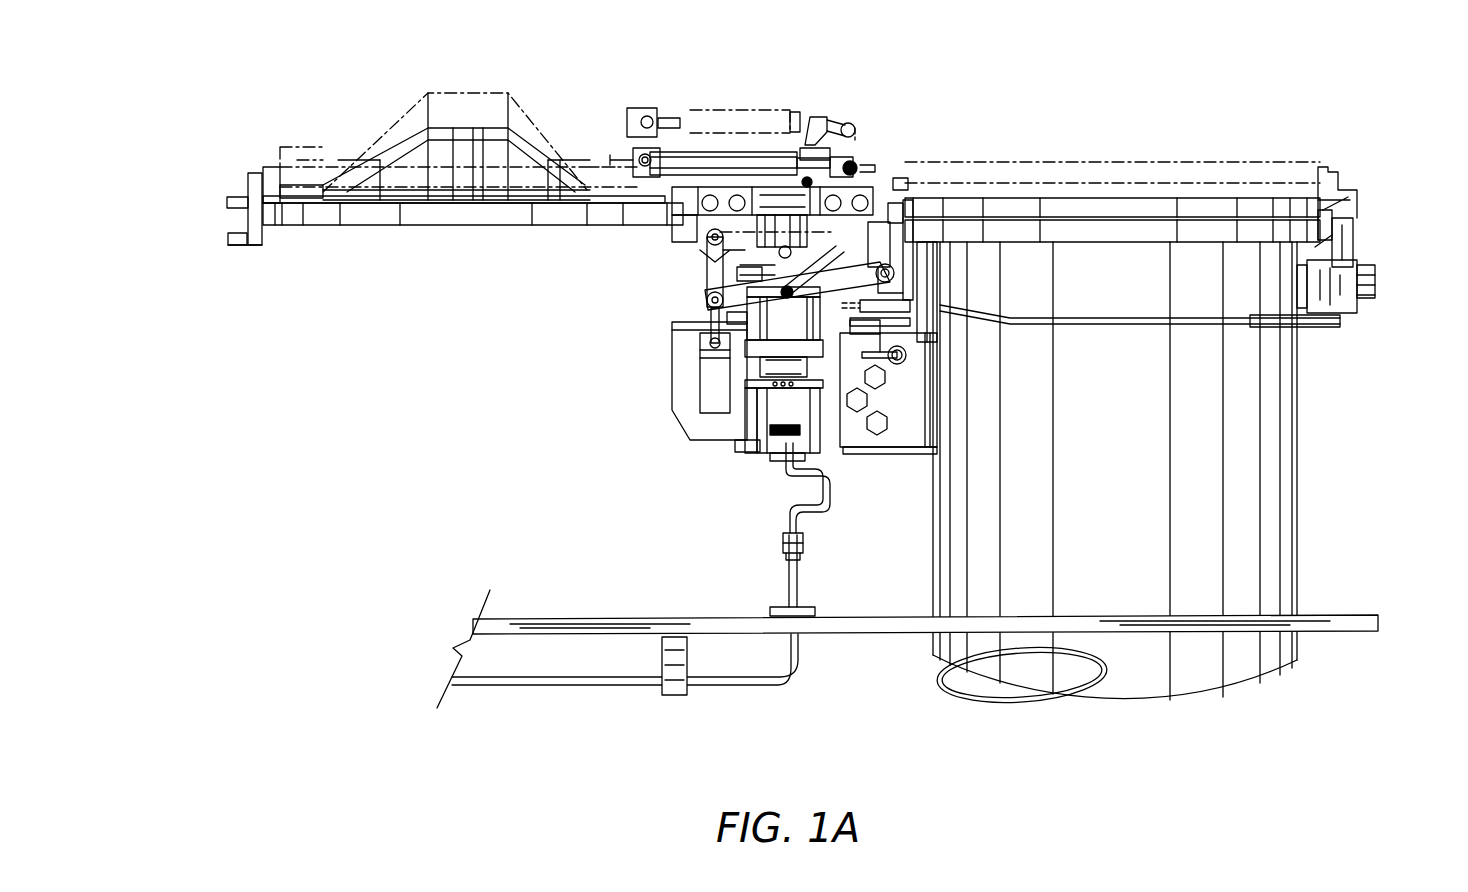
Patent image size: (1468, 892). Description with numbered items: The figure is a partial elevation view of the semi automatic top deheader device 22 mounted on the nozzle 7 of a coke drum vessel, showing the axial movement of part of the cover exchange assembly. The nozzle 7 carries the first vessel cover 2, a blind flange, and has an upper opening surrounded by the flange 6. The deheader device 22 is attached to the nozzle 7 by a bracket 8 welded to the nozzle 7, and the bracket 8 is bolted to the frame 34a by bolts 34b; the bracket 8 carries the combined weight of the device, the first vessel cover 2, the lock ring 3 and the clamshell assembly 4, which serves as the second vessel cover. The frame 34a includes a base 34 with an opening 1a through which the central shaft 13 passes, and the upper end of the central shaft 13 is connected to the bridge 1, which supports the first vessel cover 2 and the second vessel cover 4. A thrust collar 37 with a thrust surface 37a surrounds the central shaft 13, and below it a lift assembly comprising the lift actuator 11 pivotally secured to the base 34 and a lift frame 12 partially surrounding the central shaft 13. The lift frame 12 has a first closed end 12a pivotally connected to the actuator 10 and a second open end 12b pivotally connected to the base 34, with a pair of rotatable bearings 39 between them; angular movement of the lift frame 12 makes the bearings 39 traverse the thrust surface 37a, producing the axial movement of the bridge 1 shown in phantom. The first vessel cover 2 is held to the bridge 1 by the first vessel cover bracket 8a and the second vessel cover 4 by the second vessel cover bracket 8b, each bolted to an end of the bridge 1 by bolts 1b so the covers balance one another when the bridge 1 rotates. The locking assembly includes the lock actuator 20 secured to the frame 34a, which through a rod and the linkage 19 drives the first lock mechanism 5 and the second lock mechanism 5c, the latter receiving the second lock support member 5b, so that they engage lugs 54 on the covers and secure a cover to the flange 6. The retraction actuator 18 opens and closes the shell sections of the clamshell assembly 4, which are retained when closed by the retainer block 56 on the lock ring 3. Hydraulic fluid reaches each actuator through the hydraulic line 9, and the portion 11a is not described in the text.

The bridge 1 is at (800, 150).
The opening 1a is at (735, 400).
The bolts 1b is at (870, 160).
The first vessel cover 2 is at (1148, 212).
The lock ring 3 is at (385, 215).
The clamshell assembly 4 is at (405, 112).
The first lock mechanism 5 is at (900, 195).
The second lock support member 5b is at (1378, 272).
The second lock mechanism 5c is at (1355, 245).
The flange 6 is at (1215, 228).
The nozzle 7 is at (1300, 495).
The bracket 8 is at (905, 455).
The first vessel cover bracket 8a is at (908, 178).
The second vessel cover bracket 8b is at (630, 150).
The hydraulic line 9 is at (740, 690).
The rotary actuator 10 is at (740, 445).
The lift actuator 11 is at (695, 372).
The bracket arm 11a is at (700, 350).
The lift frame 12 is at (712, 302).
The first closed end 12a is at (730, 320).
The second open end 12b is at (945, 277).
The central shaft 13 is at (735, 250).
The retraction actuator 18 is at (715, 147).
The linkage 19 is at (1262, 330).
The lock actuator 20 is at (900, 360).
The semi automatic top deheader device 22 is at (740, 110).
The base 34 is at (705, 340).
The frame 34a is at (715, 435).
The bolts 34b is at (865, 455).
The thrust collar 37 is at (820, 258).
The thrust surface 37a is at (730, 295).
The rotatable bearings 39 is at (783, 313).
The lugs 54 is at (230, 237).
The retainer block 56 is at (260, 185).